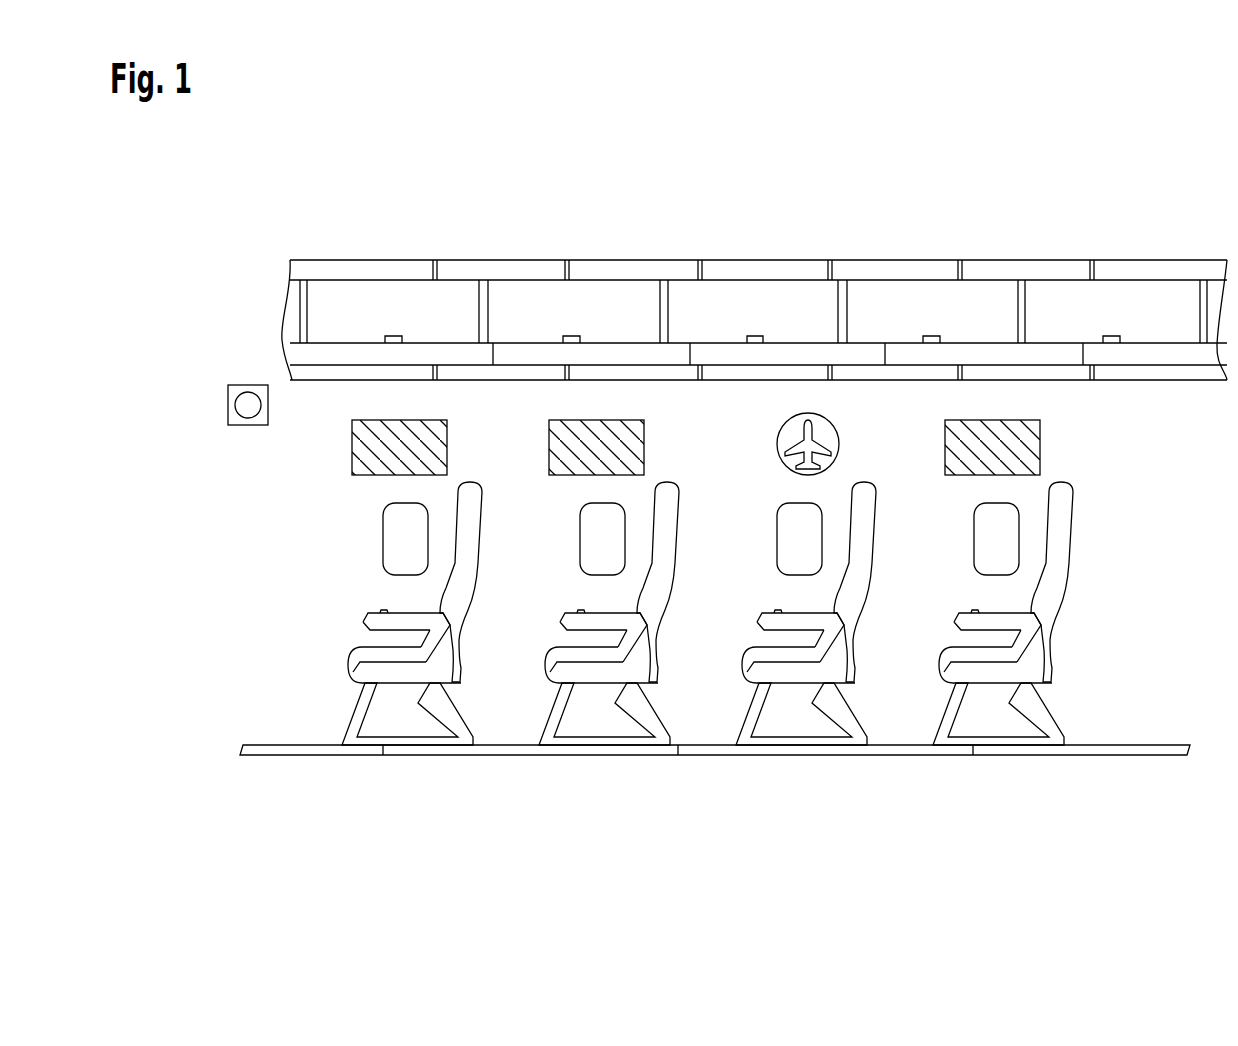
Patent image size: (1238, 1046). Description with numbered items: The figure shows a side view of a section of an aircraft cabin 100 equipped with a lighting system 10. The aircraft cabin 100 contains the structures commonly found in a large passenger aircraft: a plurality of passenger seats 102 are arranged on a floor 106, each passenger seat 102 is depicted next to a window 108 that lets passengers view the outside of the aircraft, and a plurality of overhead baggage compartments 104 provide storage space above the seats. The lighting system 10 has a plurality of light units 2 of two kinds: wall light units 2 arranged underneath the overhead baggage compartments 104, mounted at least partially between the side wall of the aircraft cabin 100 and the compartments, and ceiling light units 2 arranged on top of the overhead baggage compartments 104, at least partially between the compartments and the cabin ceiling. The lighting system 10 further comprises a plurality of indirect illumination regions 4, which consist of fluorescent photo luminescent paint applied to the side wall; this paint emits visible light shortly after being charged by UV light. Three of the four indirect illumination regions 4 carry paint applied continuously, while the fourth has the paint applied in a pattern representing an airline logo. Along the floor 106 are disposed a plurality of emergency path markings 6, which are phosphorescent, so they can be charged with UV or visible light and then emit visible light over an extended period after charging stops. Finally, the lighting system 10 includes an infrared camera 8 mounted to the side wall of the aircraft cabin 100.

The light unit 2 is at (365, 268).
The overhead baggage compartment 104 is at (420, 297).
The indirect illumination region 4 is at (438, 458).
The emergency path marking 6 is at (272, 755).
The infrared camera 8 is at (248, 412).
The lighting system 10 is at (1139, 471).
The aircraft cabin 100 is at (280, 618).
The passenger seat 102 is at (465, 580).
The floor 106 is at (715, 748).
The window 108 is at (392, 523).